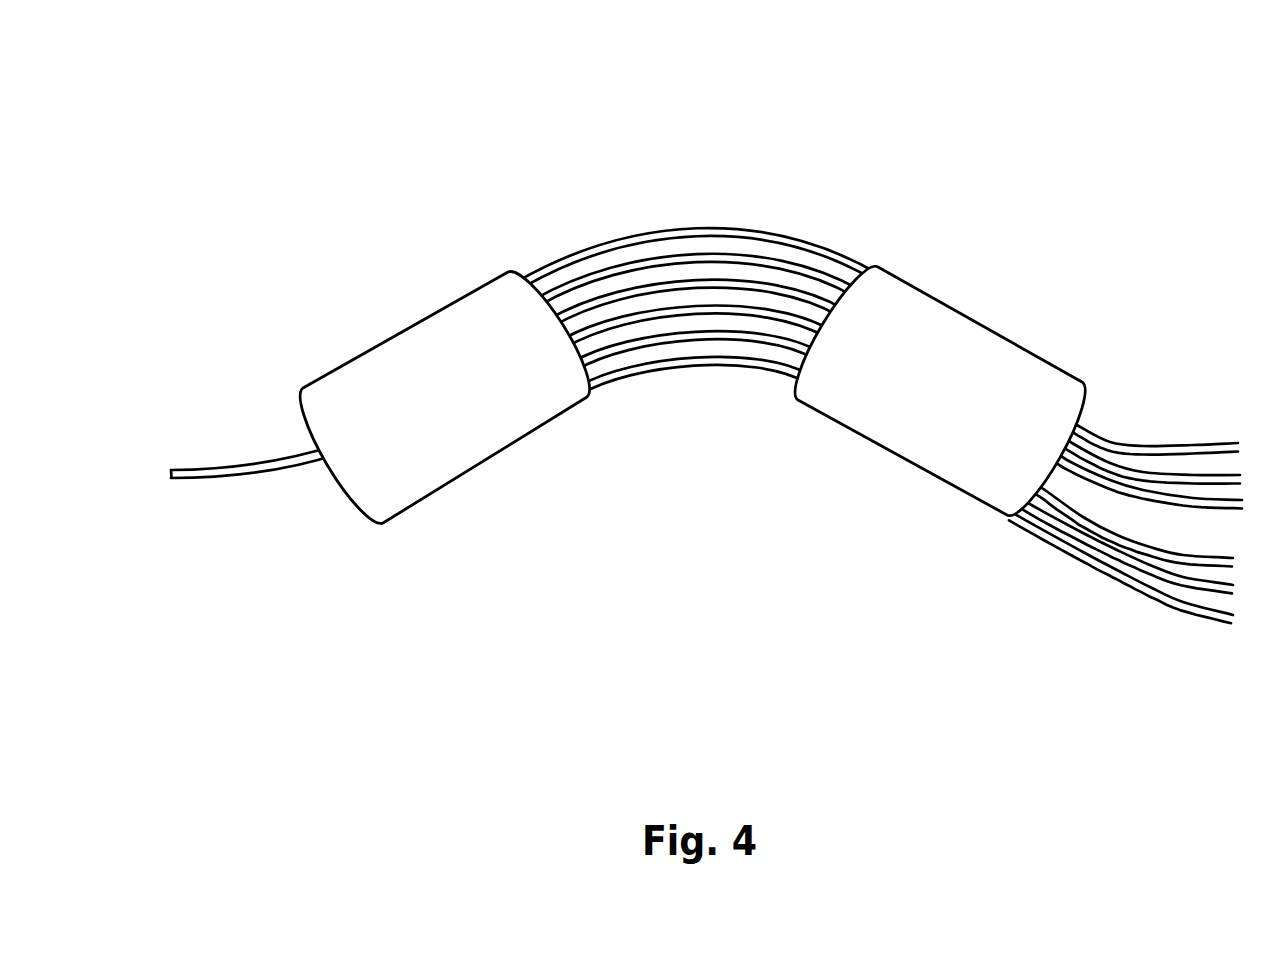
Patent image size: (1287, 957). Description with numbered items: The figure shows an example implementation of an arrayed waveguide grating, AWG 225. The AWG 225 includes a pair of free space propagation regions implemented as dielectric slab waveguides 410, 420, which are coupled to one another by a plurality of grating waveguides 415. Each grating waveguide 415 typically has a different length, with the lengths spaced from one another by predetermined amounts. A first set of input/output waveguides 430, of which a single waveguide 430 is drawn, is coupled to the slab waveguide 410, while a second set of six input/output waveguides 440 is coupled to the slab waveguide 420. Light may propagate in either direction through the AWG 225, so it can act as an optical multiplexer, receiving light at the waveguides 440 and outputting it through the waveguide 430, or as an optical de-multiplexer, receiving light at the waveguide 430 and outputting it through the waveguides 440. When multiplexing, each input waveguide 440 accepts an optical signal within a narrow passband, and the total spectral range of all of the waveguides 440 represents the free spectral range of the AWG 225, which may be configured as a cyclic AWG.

The arrayed waveguide grating 225 is at (218, 47).
The slab waveguide 410 is at (482, 287).
The grating waveguides 415 is at (726, 216).
The slab waveguide 420 is at (970, 318).
The input/output waveguide 430 is at (238, 469).
The input/output waveguides 440 is at (1122, 418).